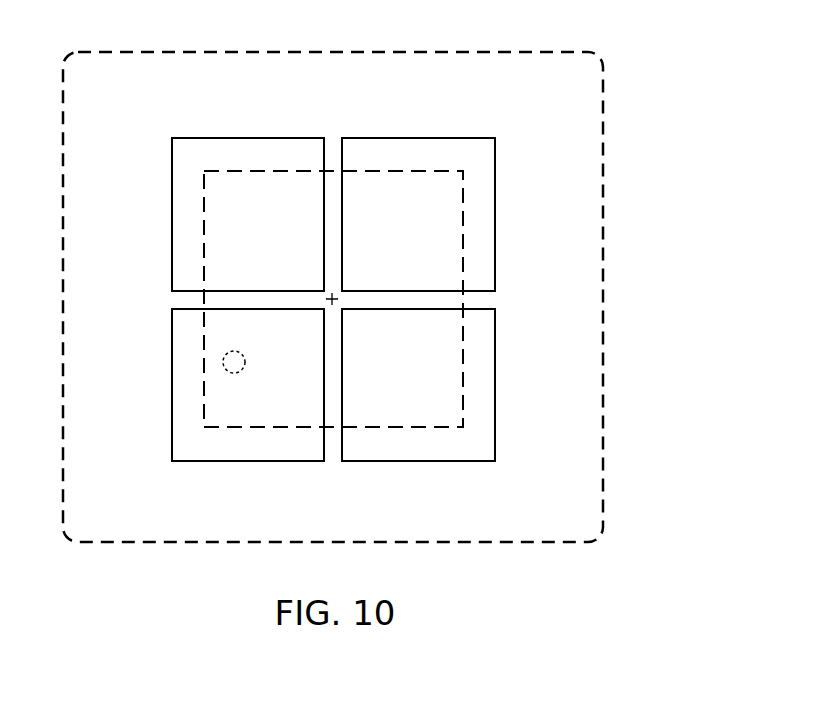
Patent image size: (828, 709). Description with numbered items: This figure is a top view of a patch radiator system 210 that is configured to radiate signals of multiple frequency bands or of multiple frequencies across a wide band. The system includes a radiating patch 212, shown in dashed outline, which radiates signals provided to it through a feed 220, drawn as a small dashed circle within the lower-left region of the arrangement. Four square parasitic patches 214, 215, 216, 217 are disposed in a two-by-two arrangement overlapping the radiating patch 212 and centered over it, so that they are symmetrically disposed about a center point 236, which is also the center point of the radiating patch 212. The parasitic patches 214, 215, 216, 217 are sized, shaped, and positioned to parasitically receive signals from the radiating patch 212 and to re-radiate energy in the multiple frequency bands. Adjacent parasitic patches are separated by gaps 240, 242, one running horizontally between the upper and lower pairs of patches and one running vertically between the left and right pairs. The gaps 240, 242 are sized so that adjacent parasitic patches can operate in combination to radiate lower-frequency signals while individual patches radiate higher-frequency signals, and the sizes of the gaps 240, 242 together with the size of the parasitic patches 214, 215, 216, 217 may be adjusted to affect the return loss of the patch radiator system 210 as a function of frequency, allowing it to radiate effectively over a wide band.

The patch radiator system 210 is at (603, 120).
The radiating patch 212 is at (463, 364).
The parasitic patch 214 is at (238, 138).
The parasitic patch 215 is at (418, 138).
The parasitic patch 216 is at (288, 462).
The parasitic patch 217 is at (408, 462).
The feed 220 is at (223, 357).
The center point 236 is at (328, 296).
The gap 240 is at (164, 299).
The gap 242 is at (328, 120).